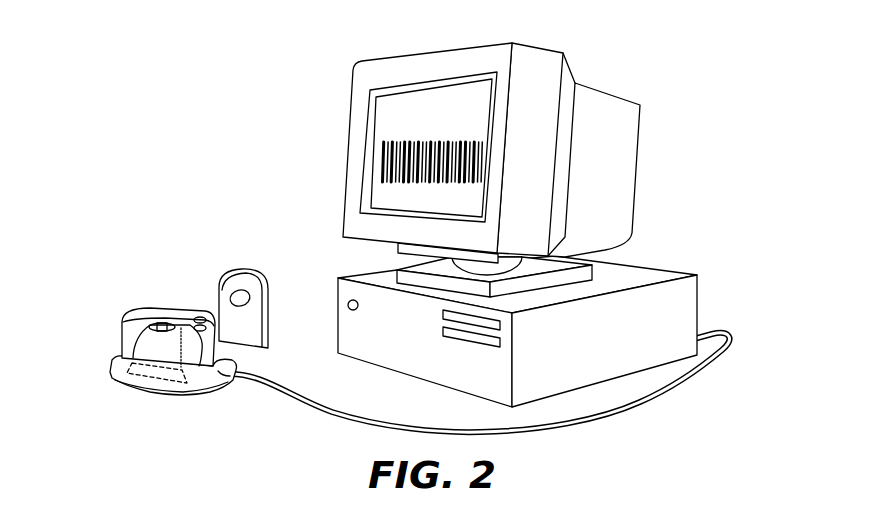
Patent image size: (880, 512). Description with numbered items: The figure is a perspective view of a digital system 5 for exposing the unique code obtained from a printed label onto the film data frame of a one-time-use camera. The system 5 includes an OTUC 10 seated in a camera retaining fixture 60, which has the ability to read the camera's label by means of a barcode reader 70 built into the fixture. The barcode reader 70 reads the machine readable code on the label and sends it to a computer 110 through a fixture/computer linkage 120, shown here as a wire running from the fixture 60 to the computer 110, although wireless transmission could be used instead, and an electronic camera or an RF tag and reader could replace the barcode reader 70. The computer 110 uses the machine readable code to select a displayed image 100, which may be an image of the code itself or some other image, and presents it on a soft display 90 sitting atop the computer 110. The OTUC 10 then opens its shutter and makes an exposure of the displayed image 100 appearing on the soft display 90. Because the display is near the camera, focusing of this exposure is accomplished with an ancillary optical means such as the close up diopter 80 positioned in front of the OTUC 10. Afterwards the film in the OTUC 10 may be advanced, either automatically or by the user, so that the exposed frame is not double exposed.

The system 5 is at (710, 43).
The OTUC 10 is at (147, 307).
The camera retaining fixture 60 is at (110, 372).
The barcode reader 70 is at (188, 396).
The close up diopter 80 is at (230, 290).
The soft display 90 is at (638, 165).
The displayed image 100 is at (438, 100).
The computer 110 is at (677, 272).
The fixture/computer linkage 120 is at (723, 362).